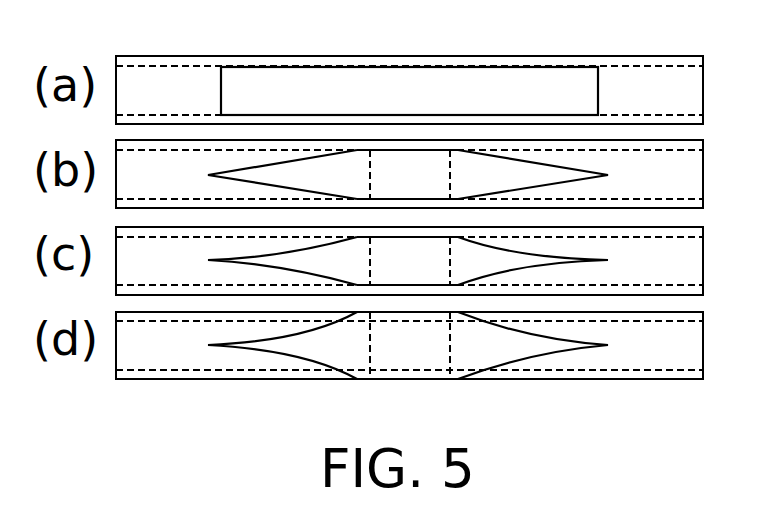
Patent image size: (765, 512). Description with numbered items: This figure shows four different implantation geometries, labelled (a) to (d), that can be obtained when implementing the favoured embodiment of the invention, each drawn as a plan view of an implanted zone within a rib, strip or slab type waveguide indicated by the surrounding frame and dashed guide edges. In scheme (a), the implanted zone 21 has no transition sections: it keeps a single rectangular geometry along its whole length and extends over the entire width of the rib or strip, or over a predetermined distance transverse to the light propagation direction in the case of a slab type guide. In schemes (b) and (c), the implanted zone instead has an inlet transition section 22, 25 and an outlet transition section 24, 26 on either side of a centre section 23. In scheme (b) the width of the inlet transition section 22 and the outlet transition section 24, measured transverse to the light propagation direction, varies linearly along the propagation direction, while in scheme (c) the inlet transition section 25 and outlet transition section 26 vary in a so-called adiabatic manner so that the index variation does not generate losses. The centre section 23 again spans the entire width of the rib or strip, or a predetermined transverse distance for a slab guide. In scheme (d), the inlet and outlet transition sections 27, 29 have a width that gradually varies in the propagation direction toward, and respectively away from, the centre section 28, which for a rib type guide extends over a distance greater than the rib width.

The implanted zone 21 is at (490, 78).
The inlet transition section 22 is at (327, 170).
The centre section 23 is at (411, 165).
The outlet transition section 24 is at (510, 172).
The inlet transition section 25 is at (313, 260).
The outlet transition section 26 is at (503, 258).
The inlet transition section 27 is at (340, 352).
The centre section 28 is at (395, 352).
The outlet transition section 29 is at (488, 352).